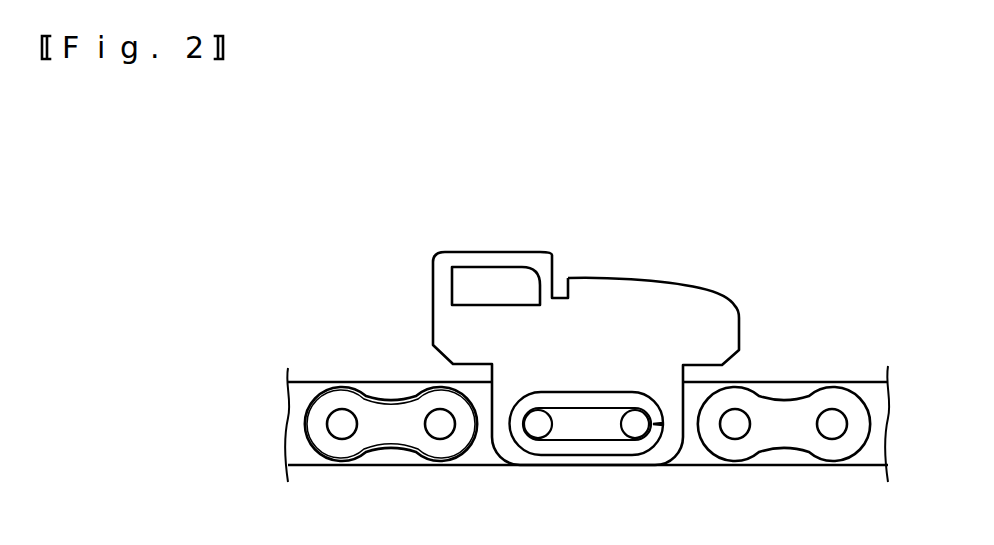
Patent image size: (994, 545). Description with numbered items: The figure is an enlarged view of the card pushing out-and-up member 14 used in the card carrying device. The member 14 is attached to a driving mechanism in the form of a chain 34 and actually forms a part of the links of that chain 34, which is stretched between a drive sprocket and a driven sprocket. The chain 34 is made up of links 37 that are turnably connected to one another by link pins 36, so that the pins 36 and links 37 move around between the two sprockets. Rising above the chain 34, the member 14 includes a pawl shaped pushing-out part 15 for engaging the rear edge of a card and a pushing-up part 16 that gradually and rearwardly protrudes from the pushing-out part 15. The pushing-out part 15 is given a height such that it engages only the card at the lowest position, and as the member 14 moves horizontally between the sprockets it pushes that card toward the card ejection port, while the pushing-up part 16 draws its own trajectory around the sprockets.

The card pushing out-and-up member 14 is at (746, 313).
The pushing-out part 15 is at (558, 270).
The pushing-up part 16 is at (482, 251).
The chain 34 is at (692, 457).
The link pins 36 is at (395, 437).
The links 37 is at (305, 460).